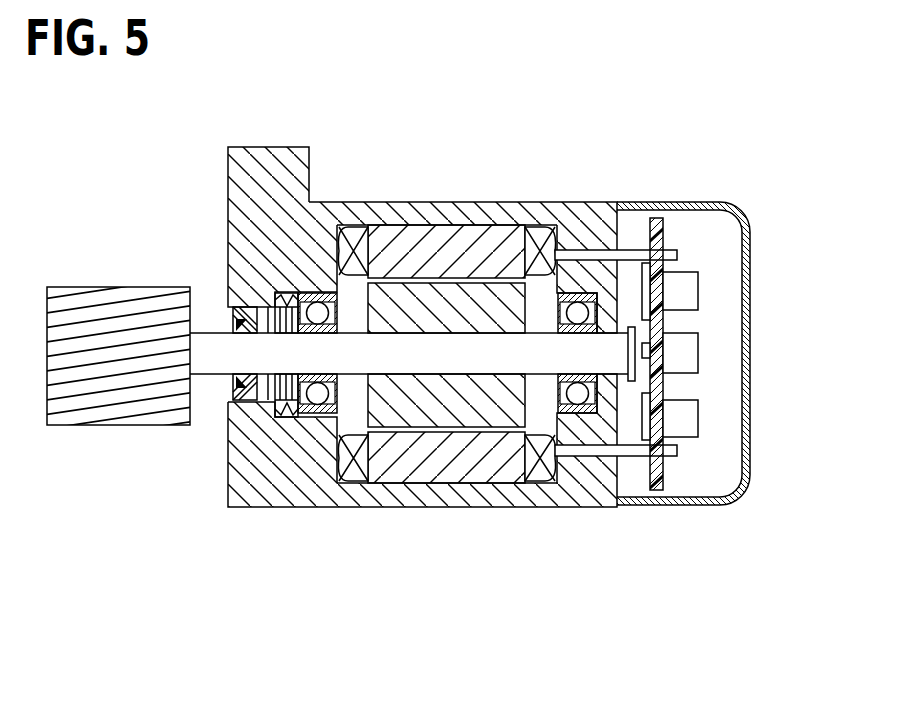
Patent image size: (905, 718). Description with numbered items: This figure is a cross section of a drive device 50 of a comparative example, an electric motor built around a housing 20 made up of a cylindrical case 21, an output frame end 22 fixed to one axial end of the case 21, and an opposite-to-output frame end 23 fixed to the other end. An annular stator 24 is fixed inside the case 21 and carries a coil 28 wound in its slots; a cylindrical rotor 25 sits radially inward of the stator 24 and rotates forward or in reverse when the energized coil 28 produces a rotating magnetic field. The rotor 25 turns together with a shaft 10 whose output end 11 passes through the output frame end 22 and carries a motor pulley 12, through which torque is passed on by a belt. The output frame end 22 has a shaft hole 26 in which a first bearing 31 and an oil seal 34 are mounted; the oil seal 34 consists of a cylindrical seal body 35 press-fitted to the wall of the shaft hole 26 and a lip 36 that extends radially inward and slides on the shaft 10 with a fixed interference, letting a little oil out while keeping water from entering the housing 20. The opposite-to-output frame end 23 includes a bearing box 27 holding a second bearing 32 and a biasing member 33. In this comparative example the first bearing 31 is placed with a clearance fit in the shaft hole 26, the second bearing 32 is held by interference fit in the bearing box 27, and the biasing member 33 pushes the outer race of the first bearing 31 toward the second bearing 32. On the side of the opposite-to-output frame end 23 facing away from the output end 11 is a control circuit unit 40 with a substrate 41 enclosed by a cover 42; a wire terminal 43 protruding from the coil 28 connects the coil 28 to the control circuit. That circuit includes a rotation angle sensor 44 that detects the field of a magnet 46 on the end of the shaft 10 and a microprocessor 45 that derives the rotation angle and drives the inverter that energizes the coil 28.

The shaft 10 is at (393, 345).
The output end 11 is at (212, 362).
The motor pulley 12 is at (80, 345).
The housing 20 is at (555, 605).
The case 21 is at (440, 507).
The output frame end 22 is at (290, 485).
The opposite-to-output frame end 23 is at (603, 507).
The stator 24 is at (477, 257).
The rotor 25 is at (427, 297).
The shaft hole 26 is at (289, 300).
The bearing box 27 is at (560, 307).
The coil 28 is at (543, 270).
The first bearing 31 is at (323, 312).
The second bearing 32 is at (577, 313).
The biasing member 33 is at (280, 420).
The oil seal 34 is at (205, 120).
The seal body 35 is at (230, 312).
The lip 36 is at (232, 318).
The control circuit unit 40 is at (701, 250).
The substrate 41 is at (661, 238).
The cover 42 is at (750, 246).
The wire terminal 43 is at (633, 252).
The rotation angle sensor 44 is at (645, 362).
The microprocessor 45 is at (640, 415).
The magnet 46 is at (665, 336).
The drive device 50 is at (322, 80).